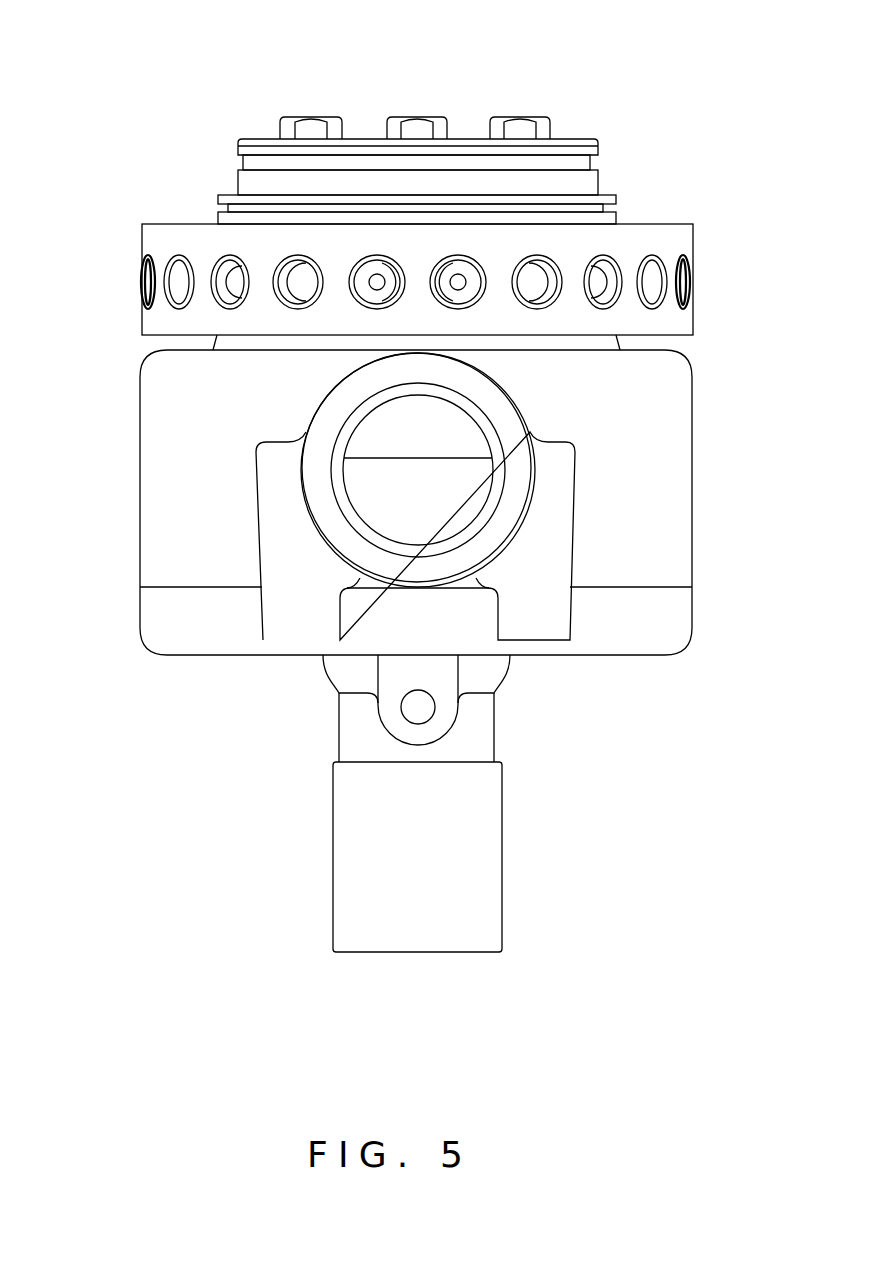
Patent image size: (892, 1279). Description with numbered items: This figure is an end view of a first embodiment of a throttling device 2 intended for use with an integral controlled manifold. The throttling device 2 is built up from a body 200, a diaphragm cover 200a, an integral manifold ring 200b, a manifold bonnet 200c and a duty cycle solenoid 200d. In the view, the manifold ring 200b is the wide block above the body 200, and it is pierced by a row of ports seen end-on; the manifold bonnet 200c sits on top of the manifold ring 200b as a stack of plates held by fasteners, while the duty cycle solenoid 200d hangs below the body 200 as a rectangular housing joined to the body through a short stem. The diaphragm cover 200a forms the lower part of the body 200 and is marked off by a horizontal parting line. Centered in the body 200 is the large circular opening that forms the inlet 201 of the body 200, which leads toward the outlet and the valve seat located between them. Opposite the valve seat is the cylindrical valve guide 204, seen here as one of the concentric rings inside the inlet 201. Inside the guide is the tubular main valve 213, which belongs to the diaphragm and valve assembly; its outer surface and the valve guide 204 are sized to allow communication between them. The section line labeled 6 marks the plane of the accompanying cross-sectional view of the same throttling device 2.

The throttling device 2 is at (421, 527).
The section line for FIG. 6 is at (418, 72).
The body 200 is at (421, 504).
The diaphragm cover 200a is at (668, 638).
The integral manifold ring 200b is at (160, 238).
The manifold bonnet 200c is at (243, 180).
The duty cycle solenoid 200d is at (483, 875).
The inlet 201 is at (370, 526).
The cylindrical valve guide 204 is at (472, 477).
The tubular main valve 213 is at (457, 427).